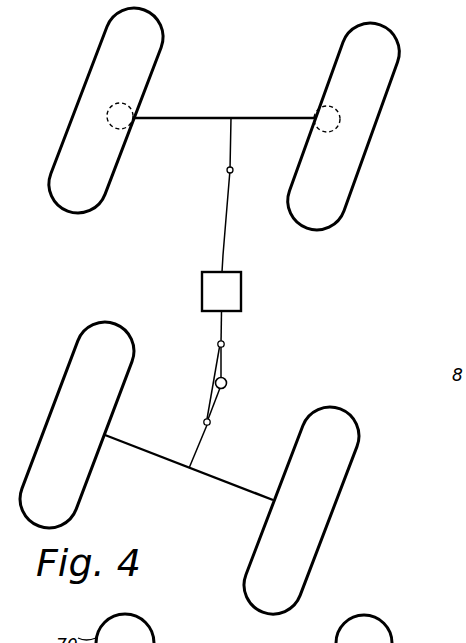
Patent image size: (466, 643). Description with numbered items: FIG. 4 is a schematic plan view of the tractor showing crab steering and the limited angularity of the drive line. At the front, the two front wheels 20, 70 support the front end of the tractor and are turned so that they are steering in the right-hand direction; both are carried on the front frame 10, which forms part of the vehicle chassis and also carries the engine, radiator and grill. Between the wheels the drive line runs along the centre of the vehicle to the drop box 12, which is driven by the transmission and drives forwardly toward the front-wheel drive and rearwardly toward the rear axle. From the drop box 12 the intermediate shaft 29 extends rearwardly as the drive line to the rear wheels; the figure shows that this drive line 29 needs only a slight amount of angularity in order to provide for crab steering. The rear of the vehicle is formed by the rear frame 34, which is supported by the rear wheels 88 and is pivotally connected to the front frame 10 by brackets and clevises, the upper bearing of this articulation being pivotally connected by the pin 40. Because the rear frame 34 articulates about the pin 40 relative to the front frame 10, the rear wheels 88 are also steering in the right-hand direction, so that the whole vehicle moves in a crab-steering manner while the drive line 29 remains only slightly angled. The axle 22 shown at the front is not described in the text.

The front wheel 70 is at (103, 42).
The front wheel 20 is at (345, 48).
The front axle 22 is at (185, 117).
The frame 10 is at (230, 142).
The drop box 12 is at (241, 285).
The intermediate shaft 29 is at (217, 371).
The pin 40 is at (227, 383).
The rear frame 34 is at (157, 453).
The rear wheels 88 is at (82, 342).